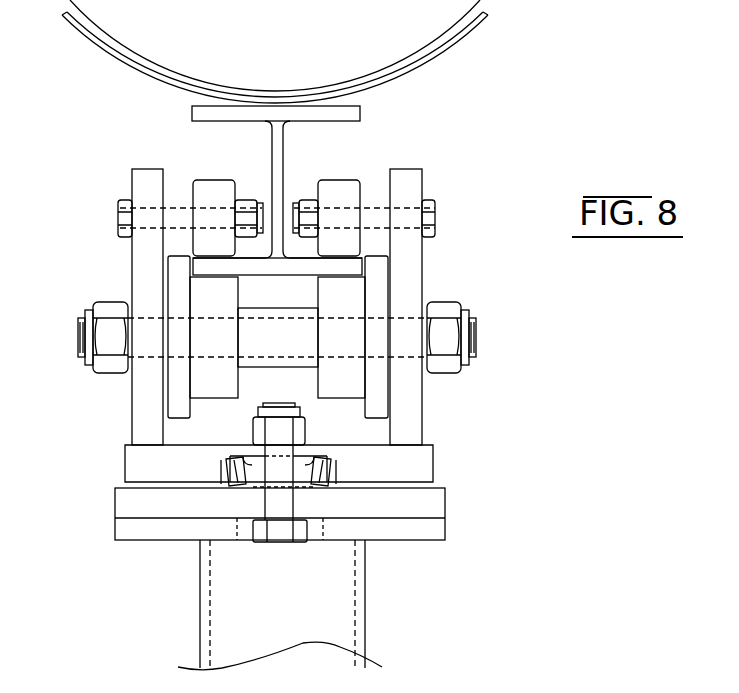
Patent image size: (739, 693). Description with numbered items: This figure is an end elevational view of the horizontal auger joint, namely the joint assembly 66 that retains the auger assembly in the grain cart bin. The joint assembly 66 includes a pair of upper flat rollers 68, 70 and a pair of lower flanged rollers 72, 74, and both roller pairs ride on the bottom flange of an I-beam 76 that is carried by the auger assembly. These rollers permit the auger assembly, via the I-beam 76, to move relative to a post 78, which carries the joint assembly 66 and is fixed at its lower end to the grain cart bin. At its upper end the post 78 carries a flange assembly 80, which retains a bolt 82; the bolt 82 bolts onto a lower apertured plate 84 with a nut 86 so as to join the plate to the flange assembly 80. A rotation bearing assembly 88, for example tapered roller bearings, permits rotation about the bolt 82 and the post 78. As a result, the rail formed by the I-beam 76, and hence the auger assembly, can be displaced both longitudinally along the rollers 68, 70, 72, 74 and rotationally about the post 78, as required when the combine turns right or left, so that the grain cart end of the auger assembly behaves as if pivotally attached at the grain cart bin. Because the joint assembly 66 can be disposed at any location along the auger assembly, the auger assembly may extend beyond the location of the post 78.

The joint assembly 66 is at (534, 121).
The upper flat roller 68 is at (213, 180).
The upper flat roller 70 is at (345, 180).
The lower flanged roller 72 is at (180, 398).
The lower flanged roller 74 is at (377, 410).
The I-beam 76 is at (360, 111).
The post 78 is at (365, 583).
The flange assembly 80 is at (443, 500).
The bolt 82 is at (253, 502).
The lower apertured plate 84 is at (125, 463).
The nut 86 is at (302, 426).
The rotation bearing assembly 88 is at (242, 452).